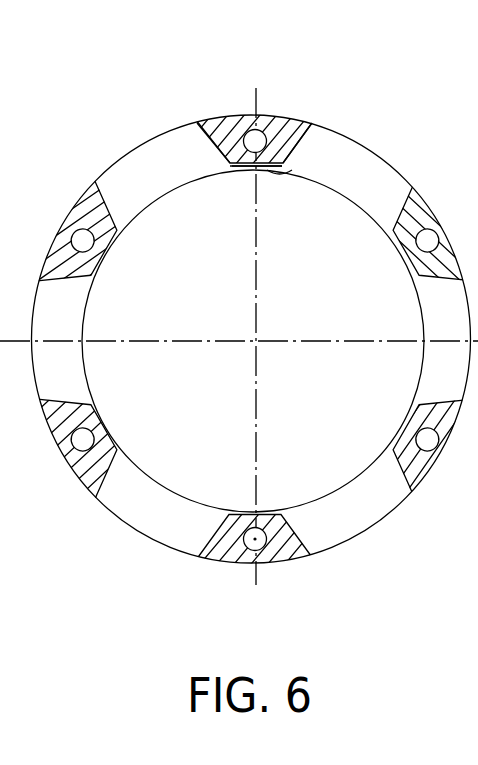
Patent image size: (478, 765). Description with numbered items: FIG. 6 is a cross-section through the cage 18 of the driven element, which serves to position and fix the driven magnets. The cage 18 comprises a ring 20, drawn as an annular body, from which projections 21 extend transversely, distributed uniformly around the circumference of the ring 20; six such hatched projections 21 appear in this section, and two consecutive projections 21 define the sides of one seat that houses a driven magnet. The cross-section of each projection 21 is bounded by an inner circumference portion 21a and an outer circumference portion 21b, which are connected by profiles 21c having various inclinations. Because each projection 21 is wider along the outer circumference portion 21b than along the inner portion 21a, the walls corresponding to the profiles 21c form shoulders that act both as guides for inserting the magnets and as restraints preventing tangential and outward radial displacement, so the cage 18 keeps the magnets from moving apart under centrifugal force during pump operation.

The cage 18 is at (143, 537).
The ring 20 is at (44, 378).
The projections 21 is at (233, 113).
The inner circumference portion 21a is at (319, 125).
The outer circumference portion 21b is at (290, 117).
The profiles 21c is at (185, 128).